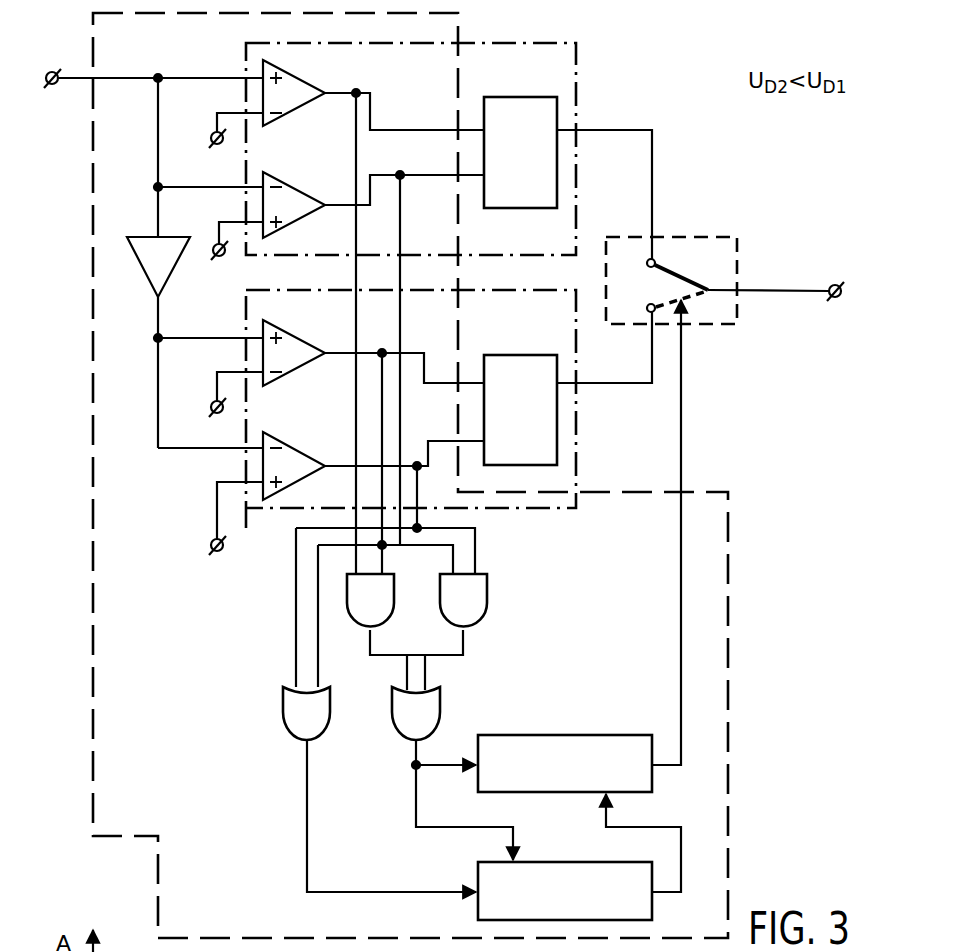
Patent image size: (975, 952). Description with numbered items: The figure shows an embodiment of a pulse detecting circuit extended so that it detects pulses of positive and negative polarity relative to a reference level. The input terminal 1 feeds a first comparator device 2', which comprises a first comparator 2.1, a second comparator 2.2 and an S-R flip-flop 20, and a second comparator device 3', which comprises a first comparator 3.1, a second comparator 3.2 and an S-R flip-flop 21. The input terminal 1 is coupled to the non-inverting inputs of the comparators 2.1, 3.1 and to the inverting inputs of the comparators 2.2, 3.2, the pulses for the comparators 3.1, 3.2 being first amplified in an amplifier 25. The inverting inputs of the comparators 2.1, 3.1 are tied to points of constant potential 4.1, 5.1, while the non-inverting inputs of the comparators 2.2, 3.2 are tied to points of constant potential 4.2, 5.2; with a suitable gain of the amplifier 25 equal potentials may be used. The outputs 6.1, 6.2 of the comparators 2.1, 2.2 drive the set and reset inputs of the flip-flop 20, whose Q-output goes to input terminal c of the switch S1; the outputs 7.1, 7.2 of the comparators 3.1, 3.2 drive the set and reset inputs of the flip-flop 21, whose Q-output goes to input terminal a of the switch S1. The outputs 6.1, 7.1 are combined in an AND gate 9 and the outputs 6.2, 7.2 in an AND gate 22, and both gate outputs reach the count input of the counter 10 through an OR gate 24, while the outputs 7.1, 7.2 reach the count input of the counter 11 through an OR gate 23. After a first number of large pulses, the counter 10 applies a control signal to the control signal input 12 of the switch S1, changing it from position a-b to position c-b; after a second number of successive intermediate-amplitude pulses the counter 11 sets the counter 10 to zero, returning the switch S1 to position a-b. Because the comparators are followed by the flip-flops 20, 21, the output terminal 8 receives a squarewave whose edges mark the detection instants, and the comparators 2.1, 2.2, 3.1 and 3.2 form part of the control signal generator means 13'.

The input terminal 1 is at (47, 70).
The first comparator device 2' is at (412, 130).
The second comparator device 3' is at (432, 409).
The first comparator 2.1 is at (290, 113).
The second comparator 2.2 is at (286, 176).
The first comparator 3.1 is at (287, 332).
The second comparator 3.2 is at (300, 454).
The point of constant potential 4.1 is at (212, 130).
The point of constant potential 4.2 is at (216, 242).
The point of constant potential 5.1 is at (212, 402).
The point of constant potential 5.2 is at (211, 540).
The output of comparator 2.1 6.1 is at (354, 92).
The output of comparator 2.2 6.2 is at (398, 174).
The output of comparator 3.1 7.1 is at (381, 352).
The output of comparator 3.2 7.2 is at (417, 462).
The output terminal 8 is at (838, 298).
The AND gate 9 is at (395, 588).
The counter 10 is at (537, 735).
The counter 11 is at (543, 862).
The control signal input 12 is at (683, 326).
The control signal generator means 13' is at (438, 475).
The S-R flip-flop 20 is at (523, 97).
The S-R flip-flop 21 is at (505, 355).
The AND gate 22 is at (487, 598).
The OR gate 23 is at (283, 705).
The OR gate 24 is at (440, 708).
The amplifier 25 is at (134, 255).
The switch S1 is at (672, 237).